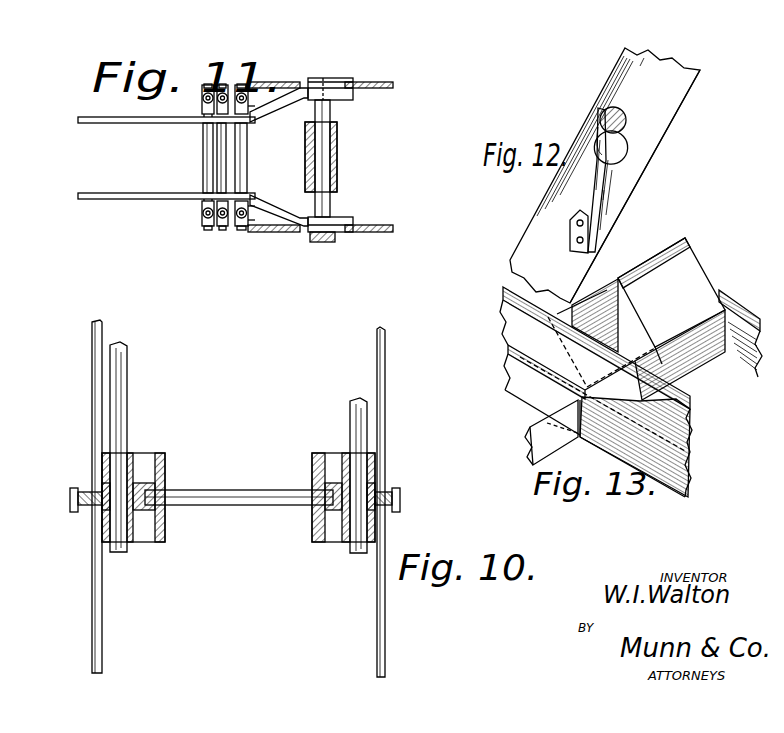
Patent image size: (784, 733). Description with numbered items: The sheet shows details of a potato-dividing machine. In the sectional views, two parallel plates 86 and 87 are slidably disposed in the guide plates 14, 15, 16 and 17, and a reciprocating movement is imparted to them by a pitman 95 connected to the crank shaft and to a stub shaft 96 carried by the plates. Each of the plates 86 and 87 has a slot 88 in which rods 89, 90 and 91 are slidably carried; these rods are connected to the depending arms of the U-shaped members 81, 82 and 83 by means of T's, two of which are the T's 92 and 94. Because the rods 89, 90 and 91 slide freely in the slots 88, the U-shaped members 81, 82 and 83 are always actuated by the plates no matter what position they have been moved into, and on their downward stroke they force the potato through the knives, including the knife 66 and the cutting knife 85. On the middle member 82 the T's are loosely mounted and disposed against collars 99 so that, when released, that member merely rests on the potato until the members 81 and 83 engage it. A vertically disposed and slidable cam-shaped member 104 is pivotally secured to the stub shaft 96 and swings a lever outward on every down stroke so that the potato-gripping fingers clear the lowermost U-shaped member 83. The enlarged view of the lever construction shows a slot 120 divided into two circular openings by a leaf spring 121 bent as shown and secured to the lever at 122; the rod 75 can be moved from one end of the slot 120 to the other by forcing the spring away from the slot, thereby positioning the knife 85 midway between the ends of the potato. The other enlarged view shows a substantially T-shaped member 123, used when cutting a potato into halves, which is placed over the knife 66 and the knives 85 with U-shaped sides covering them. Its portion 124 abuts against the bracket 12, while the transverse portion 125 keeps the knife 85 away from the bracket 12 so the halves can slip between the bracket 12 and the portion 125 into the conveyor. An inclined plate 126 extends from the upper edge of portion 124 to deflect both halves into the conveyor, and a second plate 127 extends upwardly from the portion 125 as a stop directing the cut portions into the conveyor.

In FIG. 13, the bracket 12 is at (720, 291).
In FIG. 11, the guide plate 14 is at (266, 82).
In FIG. 10, the guide plate 14 is at (92, 415).
In FIG. 12, the guide plate 14 is at (672, 115).
In FIG. 11, the guide plate 15 is at (382, 82).
In FIG. 10, the guide plate 15 is at (385, 390).
In FIG. 11, the guide plate 16 is at (280, 233).
In FIG. 11, the guide plate 17 is at (372, 233).
In FIG. 13, the knife 66 is at (516, 444).
In FIG. 12, the U-shaped member 75 is at (622, 110).
In FIG. 11, the U-shaped member 81 is at (202, 99).
In FIG. 11, the U-shaped member 82 is at (205, 120).
In FIG. 11, the U-shaped member 83 is at (249, 96).
In FIG. 13, the cutting knife 85 is at (534, 366).
In FIG. 11, the plate 86 is at (78, 117).
In FIG. 10, the plate 86 is at (165, 468).
In FIG. 11, the plate 87 is at (78, 193).
In FIG. 10, the plate 87 is at (312, 466).
In FIG. 10, the slot 88 is at (152, 505).
In FIG. 11, the rod 89 is at (203, 158).
In FIG. 11, the rod 90 is at (226, 158).
In FIG. 11, the rod 91 is at (241, 186).
In FIG. 10, the rod 91 is at (256, 505).
In FIG. 11, the T 92 is at (203, 110).
In FIG. 11, the T 94 is at (252, 115).
In FIG. 10, the T 94 is at (110, 472).
In FIG. 11, the pitman 95 is at (337, 162).
In FIG. 11, the stub shaft 96 is at (325, 196).
In FIG. 11, the collar 99 is at (240, 86).
In FIG. 11, the cam-shaped member 104 is at (312, 238).
In FIG. 12, the slot 120 is at (622, 140).
In FIG. 12, the leaf spring 121 is at (590, 190).
In FIG. 13, the leaf spring 121 is at (635, 186).
In FIG. 12, the securing point 122 is at (576, 224).
In FIG. 13, the T-shaped member 123 is at (650, 352).
In FIG. 13, the portion 124 is at (617, 367).
In FIG. 13, the portion 125 is at (507, 379).
In FIG. 13, the inclined plate 126 is at (632, 278).
In FIG. 13, the plate 127 is at (506, 328).